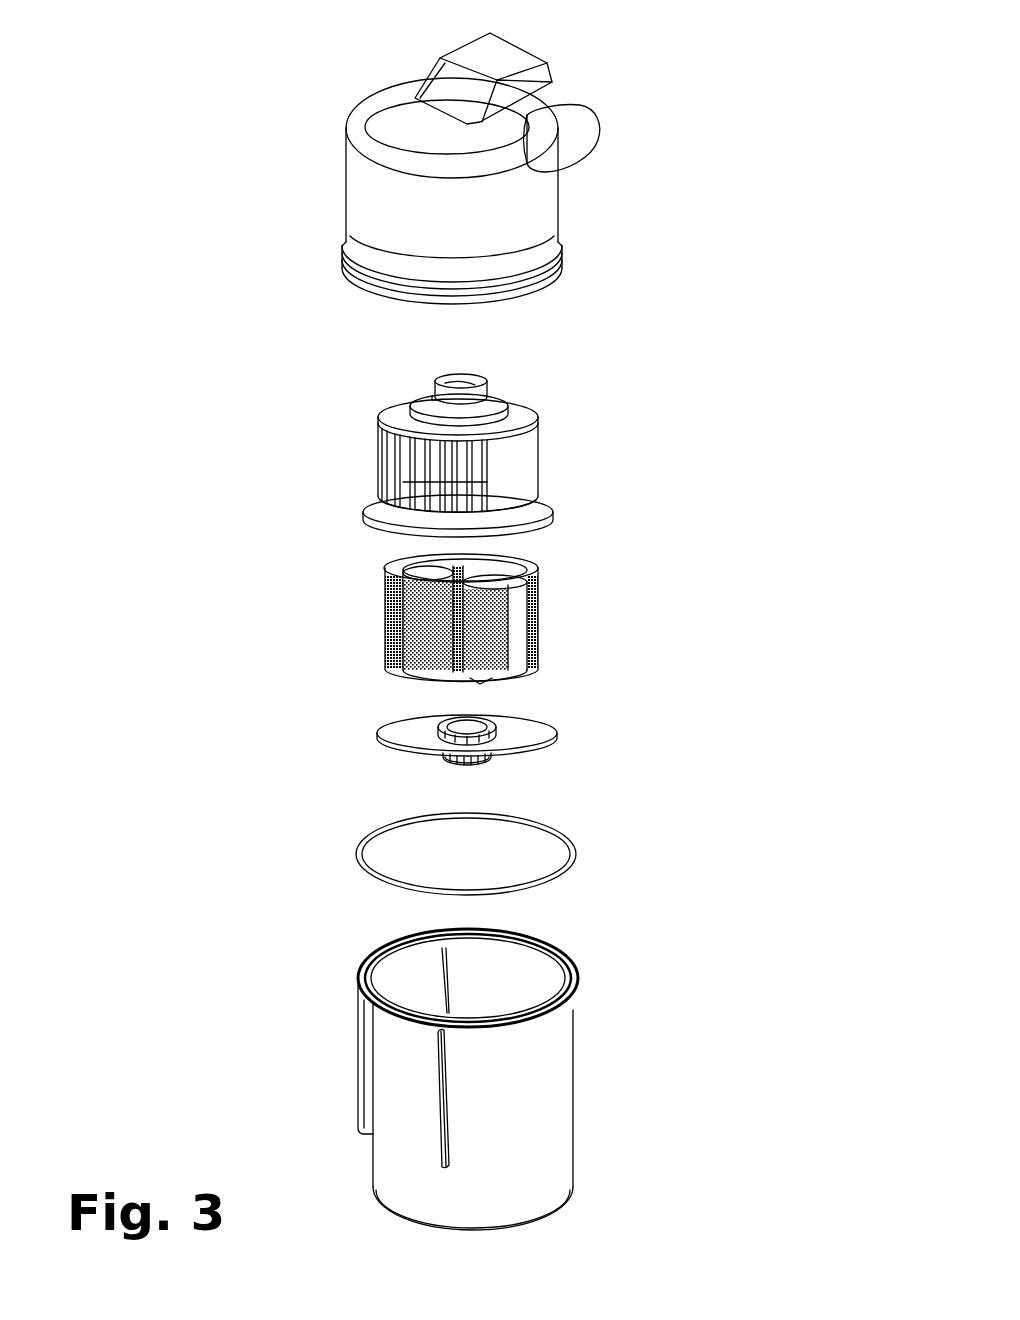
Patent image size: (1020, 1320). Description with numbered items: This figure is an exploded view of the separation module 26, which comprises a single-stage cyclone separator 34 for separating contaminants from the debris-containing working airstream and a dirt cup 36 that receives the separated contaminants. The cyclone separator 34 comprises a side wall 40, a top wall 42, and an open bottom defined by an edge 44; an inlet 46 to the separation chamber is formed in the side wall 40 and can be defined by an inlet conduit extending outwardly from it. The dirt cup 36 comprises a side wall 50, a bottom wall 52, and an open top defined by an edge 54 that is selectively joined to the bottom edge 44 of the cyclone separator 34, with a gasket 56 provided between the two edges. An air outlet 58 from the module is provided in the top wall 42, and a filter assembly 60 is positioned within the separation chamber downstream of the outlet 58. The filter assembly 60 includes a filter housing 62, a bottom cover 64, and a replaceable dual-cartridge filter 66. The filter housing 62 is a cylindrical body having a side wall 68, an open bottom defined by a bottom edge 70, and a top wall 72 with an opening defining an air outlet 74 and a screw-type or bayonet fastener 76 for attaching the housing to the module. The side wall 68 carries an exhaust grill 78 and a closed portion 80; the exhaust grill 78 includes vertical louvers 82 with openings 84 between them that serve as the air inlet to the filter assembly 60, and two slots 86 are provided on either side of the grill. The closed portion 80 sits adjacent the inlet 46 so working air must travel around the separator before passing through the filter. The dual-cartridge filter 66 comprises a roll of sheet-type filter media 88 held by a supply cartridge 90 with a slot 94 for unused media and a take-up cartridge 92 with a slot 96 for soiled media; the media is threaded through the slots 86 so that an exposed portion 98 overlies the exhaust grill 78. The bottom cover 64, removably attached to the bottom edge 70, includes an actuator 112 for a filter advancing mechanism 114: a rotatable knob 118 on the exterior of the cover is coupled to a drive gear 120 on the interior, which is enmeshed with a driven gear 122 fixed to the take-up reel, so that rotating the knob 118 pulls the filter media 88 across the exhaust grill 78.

The separation module 26 is at (720, 60).
The cyclone separator 34 is at (368, 198).
The dirt cup 36 is at (575, 1063).
The side wall 40 is at (513, 253).
The top wall 42 is at (395, 117).
The edge 44 is at (375, 287).
The inlet 46 is at (590, 140).
The side wall 50 is at (398, 1143).
The bottom wall 52 is at (420, 1227).
The edge 54 is at (553, 948).
The gasket 56 is at (560, 833).
The air outlet 58 is at (527, 53).
The filter assembly 60 is at (255, 385).
The filter housing 62 is at (542, 402).
The bottom cover 64 is at (377, 737).
The dual-cartridge filter 66 is at (583, 607).
The side wall 68 is at (538, 442).
The bottom edge 70 is at (523, 530).
The top wall 72 is at (403, 410).
The air outlet 74 is at (458, 375).
The fastener 76 is at (490, 388).
The exhaust grill 78 is at (377, 462).
The closed portion 80 is at (517, 470).
The louvers 82 is at (407, 490).
The openings 84 is at (455, 462).
The slots 86 is at (537, 492).
The filter media 88 is at (383, 640).
The supply cartridge 90 is at (417, 567).
The take-up cartridge 92 is at (518, 630).
The slot 94 is at (467, 555).
The slot 96 is at (493, 678).
The exposed portion 98 is at (403, 605).
The actuator 112 is at (463, 767).
The filter advancing mechanism 114 is at (483, 685).
The rotatable knob 118 is at (448, 758).
The drive gear 120 is at (498, 732).
The driven gear 122 is at (498, 678).